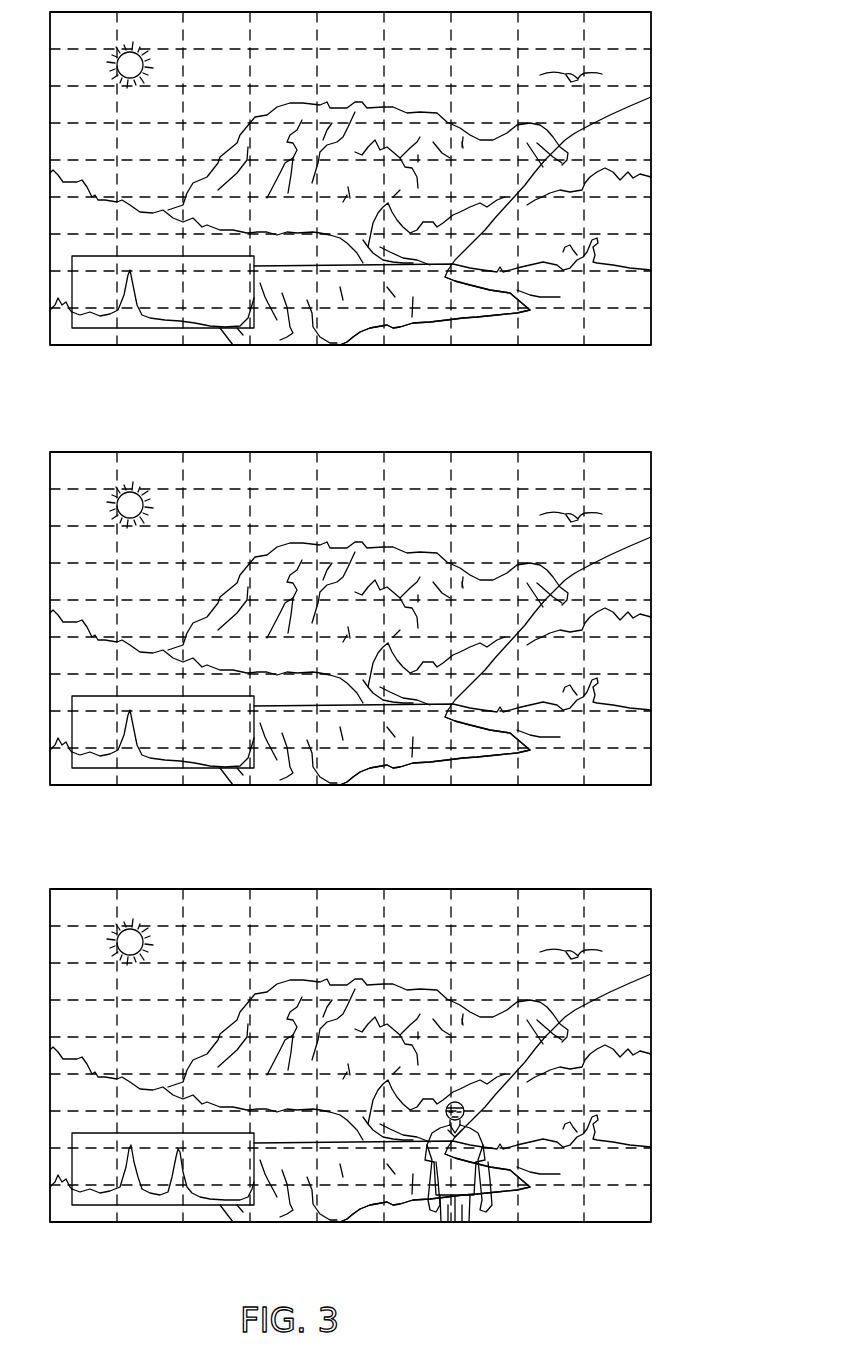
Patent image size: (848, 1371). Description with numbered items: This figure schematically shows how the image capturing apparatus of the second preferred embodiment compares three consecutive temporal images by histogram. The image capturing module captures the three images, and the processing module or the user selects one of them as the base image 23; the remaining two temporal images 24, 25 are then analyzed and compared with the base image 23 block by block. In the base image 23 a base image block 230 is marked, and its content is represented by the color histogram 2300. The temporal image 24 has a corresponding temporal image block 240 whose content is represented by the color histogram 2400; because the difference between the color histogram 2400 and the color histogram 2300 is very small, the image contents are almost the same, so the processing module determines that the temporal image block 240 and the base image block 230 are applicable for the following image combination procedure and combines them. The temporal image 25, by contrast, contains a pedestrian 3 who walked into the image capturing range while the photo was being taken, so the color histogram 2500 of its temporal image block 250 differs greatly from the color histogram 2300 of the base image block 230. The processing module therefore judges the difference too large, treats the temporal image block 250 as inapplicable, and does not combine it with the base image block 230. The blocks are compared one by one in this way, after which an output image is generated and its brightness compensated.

The temporal image 24 is at (651, 177).
The color histogram 2400 is at (85, 323).
The temporal image block 240 is at (487, 335).
The base image 23 is at (651, 617).
The color histogram 2300 is at (85, 763).
The base image block 230 is at (487, 775).
The temporal image 25 is at (651, 1054).
The color histogram 2500 is at (85, 1200).
The temporal image block 250 is at (487, 1213).
The pedestrian 3 is at (445, 1220).